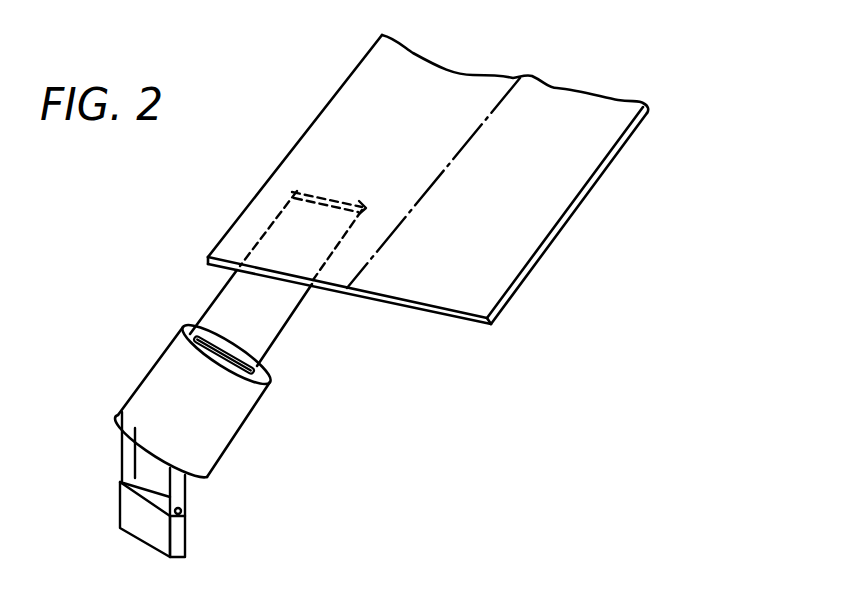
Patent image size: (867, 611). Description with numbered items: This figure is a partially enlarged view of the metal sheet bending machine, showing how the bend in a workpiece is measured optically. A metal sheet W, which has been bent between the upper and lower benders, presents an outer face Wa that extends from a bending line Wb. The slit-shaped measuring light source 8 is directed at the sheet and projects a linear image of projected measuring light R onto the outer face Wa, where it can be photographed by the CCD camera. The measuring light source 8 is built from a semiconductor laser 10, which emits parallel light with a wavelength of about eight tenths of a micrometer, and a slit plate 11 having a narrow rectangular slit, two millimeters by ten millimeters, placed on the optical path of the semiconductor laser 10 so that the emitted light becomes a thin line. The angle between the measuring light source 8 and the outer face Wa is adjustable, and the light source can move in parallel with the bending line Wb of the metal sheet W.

The metal sheet W is at (366, 85).
The outer face of the metal sheet Wa is at (290, 175).
The bending line of the metal sheet Wb is at (372, 258).
The projected measuring light R is at (322, 193).
The measuring light source 8 is at (118, 352).
The semiconductor laser 10 is at (150, 410).
The slit plate 11 is at (187, 326).